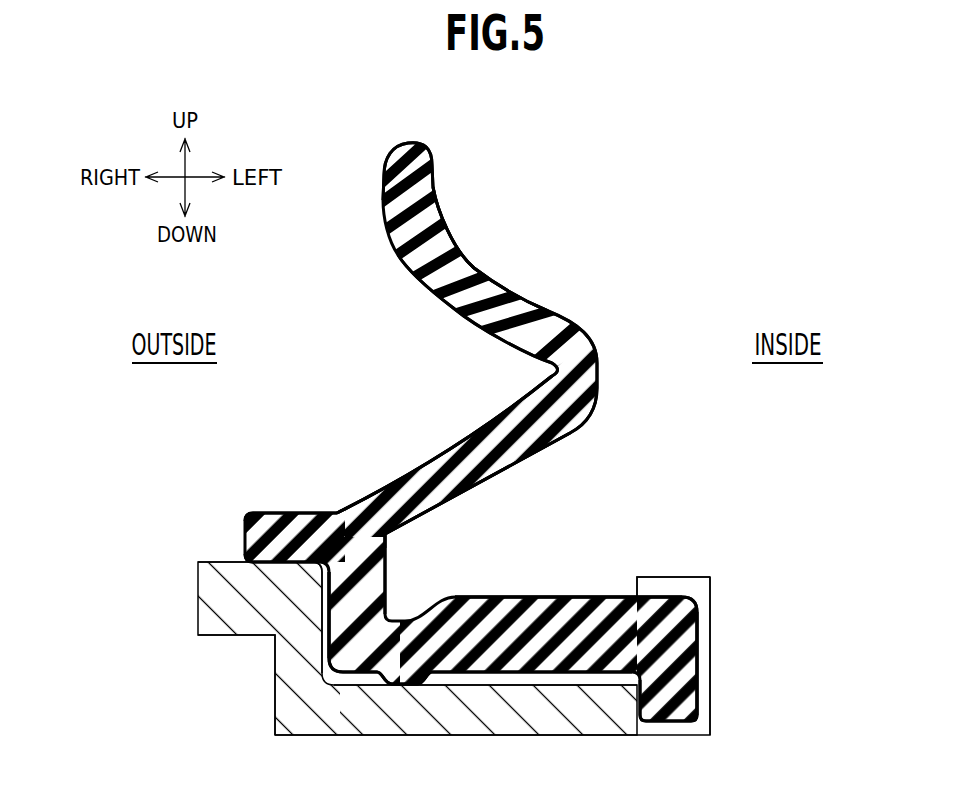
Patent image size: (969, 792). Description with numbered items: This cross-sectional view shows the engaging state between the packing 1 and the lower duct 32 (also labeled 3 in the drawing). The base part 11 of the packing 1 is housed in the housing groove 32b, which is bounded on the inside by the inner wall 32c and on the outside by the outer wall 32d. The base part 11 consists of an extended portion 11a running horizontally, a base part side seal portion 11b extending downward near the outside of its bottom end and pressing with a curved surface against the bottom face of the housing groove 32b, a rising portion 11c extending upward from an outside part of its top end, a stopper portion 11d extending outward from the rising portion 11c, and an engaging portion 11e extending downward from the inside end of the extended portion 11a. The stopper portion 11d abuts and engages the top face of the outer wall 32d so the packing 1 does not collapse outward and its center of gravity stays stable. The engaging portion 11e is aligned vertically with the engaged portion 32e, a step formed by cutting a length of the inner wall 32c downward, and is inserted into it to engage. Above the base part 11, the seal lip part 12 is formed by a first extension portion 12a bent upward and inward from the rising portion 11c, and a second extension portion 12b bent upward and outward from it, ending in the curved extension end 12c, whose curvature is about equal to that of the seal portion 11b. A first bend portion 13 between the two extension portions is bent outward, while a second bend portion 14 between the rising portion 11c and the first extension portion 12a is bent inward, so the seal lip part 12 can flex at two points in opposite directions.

The packing 1 is at (505, 264).
The connector 3 is at (454, 673).
The base part 11 is at (559, 589).
The extended portion 11a is at (483, 658).
The base part side seal portion 11b is at (412, 676).
The rising portion 11c is at (374, 562).
The stopper portion 11d is at (278, 523).
The engaging portion 11e is at (688, 663).
The seal lip part 12 is at (580, 441).
The first extension portion 12a is at (440, 475).
The second extension portion 12b is at (437, 221).
The extension end 12c is at (419, 142).
The first bend portion 13 is at (556, 371).
The second bend portion 14 is at (388, 537).
The lower duct 32 is at (597, 718).
The housing groove 32b is at (523, 680).
The inner wall 32c is at (710, 633).
The outer wall 32d is at (238, 624).
The engaged portion 32e is at (700, 590).